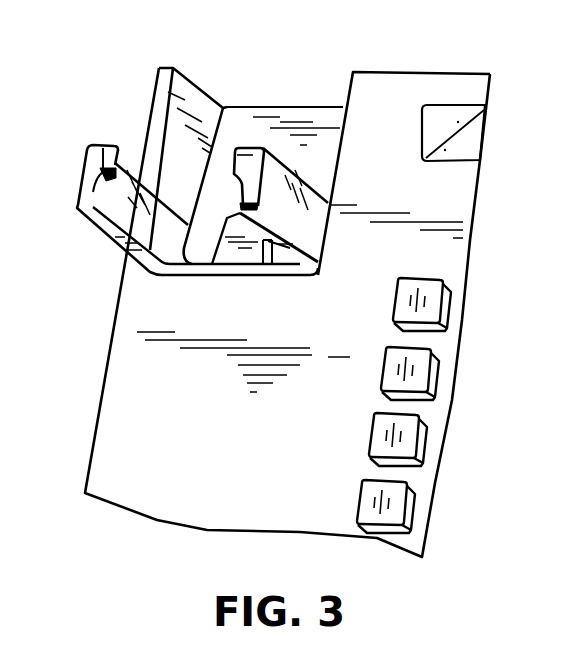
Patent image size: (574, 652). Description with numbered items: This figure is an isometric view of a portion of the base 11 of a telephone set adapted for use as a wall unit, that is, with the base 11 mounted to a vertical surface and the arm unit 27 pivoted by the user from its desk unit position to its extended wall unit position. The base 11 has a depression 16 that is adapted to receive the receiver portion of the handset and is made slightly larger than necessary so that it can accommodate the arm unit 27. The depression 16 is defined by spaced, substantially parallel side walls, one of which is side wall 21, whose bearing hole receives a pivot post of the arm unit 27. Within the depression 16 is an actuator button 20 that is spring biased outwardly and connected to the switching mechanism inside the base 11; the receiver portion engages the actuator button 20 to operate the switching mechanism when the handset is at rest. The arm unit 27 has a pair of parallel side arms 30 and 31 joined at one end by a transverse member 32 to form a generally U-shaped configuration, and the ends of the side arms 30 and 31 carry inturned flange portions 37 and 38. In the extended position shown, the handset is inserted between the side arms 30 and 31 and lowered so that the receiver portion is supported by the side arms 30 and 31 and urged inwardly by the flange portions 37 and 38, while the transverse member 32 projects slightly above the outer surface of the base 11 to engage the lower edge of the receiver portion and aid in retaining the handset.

The base 11 is at (110, 436).
The depression 16 is at (312, 107).
The actuator button 20 is at (233, 250).
The side wall 21 is at (200, 97).
The arm unit 27 is at (118, 255).
The side arm 30 is at (110, 245).
The side arm 31 is at (330, 203).
The transverse member 32 is at (262, 276).
The inturned flange portion 37 is at (103, 157).
The inturned flange portion 38 is at (243, 148).